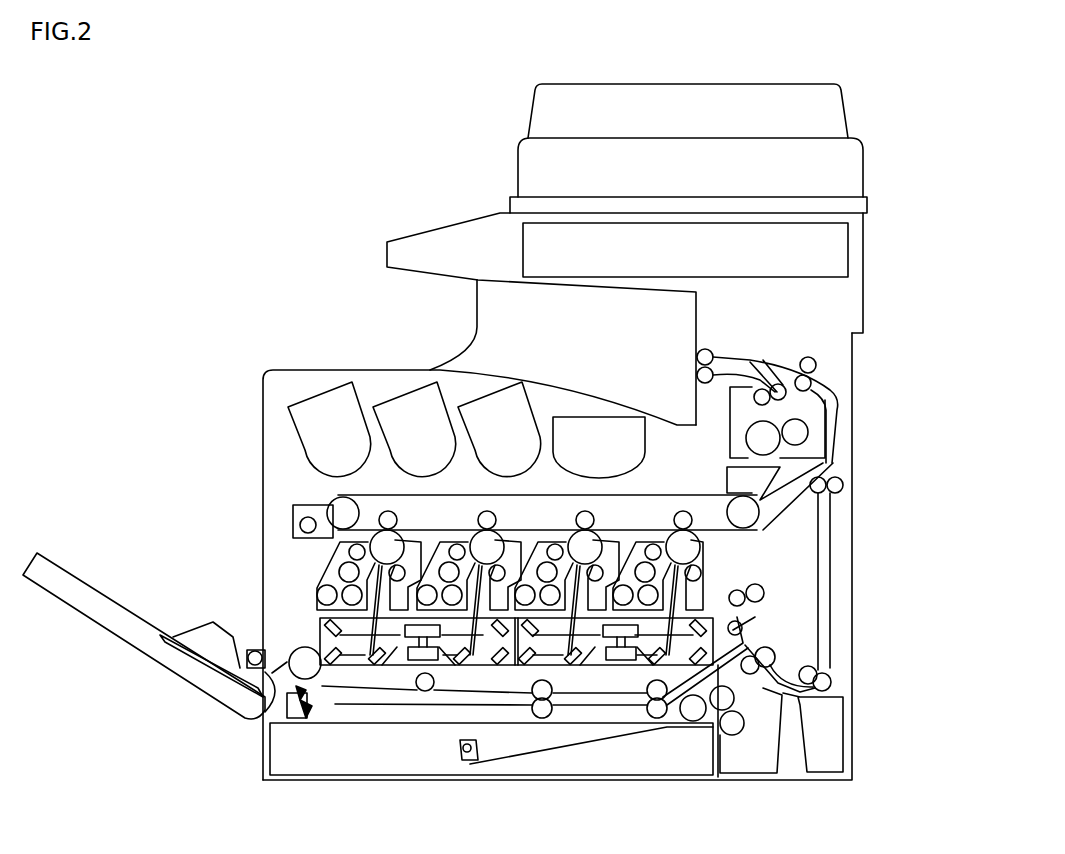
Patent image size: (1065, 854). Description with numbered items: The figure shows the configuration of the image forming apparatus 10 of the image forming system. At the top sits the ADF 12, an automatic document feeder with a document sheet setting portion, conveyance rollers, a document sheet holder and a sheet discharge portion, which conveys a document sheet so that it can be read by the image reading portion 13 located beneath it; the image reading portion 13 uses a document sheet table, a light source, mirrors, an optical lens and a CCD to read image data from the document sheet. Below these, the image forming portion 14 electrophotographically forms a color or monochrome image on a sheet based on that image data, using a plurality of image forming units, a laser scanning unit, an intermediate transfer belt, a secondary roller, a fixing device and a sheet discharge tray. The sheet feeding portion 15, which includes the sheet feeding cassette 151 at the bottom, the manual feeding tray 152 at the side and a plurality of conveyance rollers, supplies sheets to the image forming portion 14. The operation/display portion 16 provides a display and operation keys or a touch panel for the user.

The image forming apparatus 10 is at (258, 124).
The ADF 12 is at (859, 116).
The image reading portion 13 is at (858, 242).
The image forming portion 14 is at (283, 377).
The sheet feeding portion 15 is at (791, 620).
The operation/display portion 16 is at (427, 212).
The sheet feeding cassette 151 is at (267, 753).
The manual feeding tray 152 is at (145, 617).